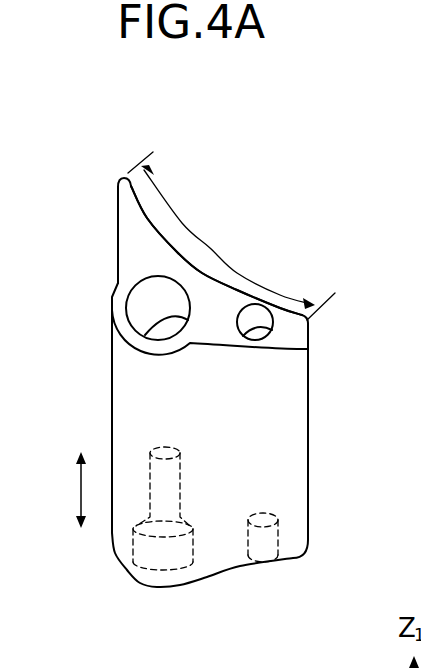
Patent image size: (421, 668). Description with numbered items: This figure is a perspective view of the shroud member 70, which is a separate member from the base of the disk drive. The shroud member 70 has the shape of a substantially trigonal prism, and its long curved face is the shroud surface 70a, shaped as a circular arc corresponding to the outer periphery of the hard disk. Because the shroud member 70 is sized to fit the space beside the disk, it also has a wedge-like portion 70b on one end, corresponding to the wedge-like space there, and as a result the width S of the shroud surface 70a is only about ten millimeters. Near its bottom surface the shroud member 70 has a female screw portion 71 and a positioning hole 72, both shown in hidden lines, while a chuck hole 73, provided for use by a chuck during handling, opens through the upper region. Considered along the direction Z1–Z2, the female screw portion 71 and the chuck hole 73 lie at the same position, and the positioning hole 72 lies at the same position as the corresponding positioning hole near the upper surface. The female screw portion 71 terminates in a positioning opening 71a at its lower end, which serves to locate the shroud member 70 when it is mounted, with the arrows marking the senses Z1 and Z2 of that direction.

The shroud member 70 is at (308, 144).
The shroud surface 70a is at (178, 253).
The wedge-like portion 70b is at (133, 227).
The female screw portion 71 is at (148, 472).
The positioning opening 71a is at (157, 557).
The positioning hole 72 is at (261, 510).
The chuck hole 73 is at (148, 300).
The width of the shroud surface S is at (225, 262).
The direction Z1 is at (81, 473).
The direction Z2 is at (81, 559).